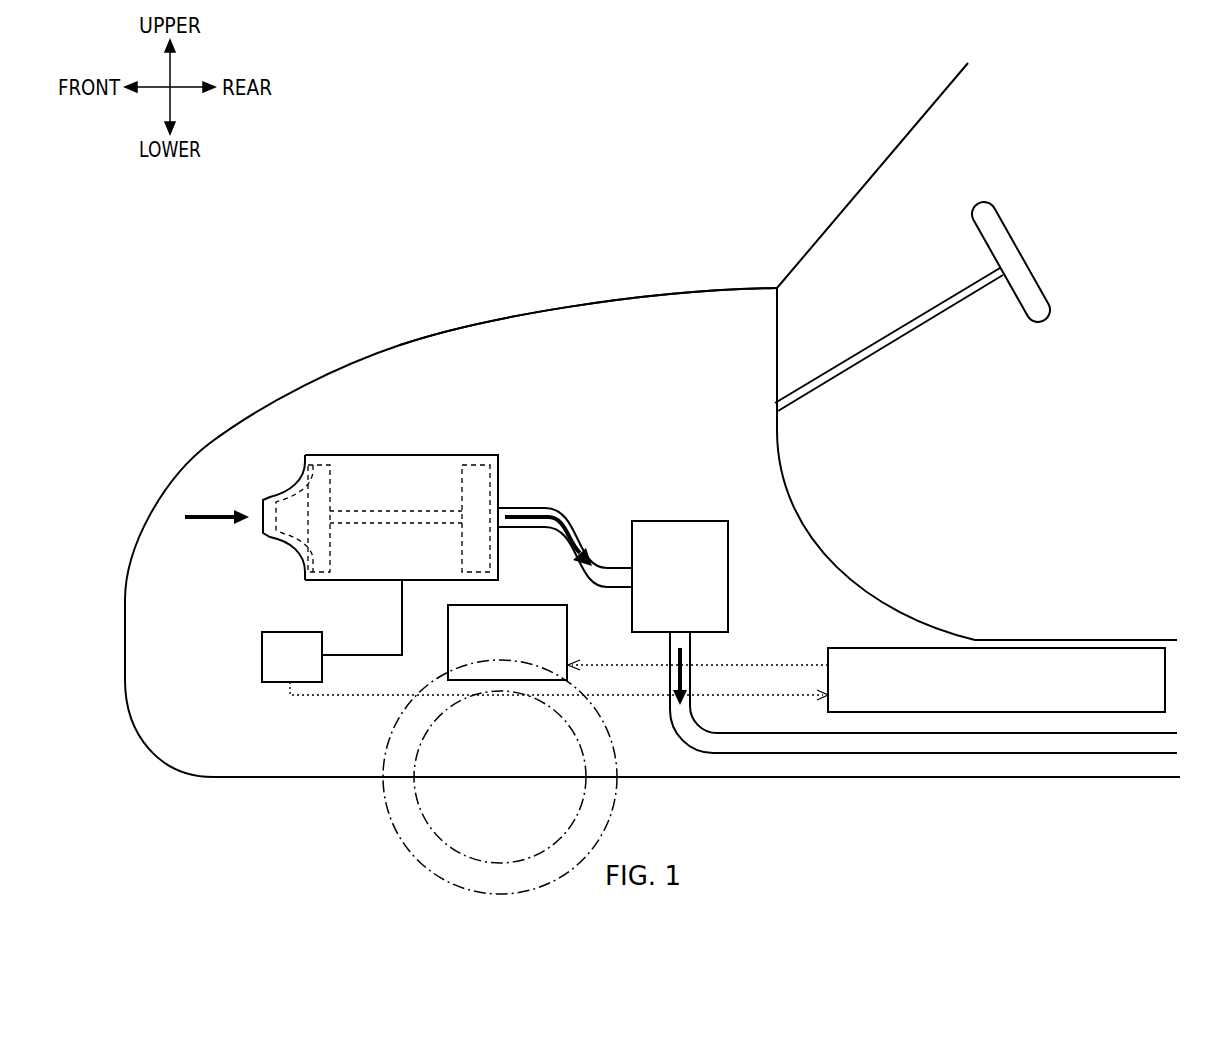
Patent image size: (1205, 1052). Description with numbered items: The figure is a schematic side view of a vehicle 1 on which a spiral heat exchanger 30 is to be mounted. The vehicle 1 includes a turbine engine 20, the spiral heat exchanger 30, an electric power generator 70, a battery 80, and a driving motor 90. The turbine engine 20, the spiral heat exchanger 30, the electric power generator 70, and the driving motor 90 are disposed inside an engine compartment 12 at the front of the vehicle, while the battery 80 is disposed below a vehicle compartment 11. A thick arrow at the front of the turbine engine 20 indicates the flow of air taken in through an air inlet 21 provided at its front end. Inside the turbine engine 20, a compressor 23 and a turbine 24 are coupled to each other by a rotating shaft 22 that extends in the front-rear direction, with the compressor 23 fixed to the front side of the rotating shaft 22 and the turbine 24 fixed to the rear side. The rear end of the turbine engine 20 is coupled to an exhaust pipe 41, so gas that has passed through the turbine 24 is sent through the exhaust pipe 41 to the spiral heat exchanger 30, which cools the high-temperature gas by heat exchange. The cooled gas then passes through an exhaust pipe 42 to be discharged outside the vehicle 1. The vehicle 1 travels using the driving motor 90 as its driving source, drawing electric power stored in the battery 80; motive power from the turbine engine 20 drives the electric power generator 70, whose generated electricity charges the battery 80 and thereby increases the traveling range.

The vehicle 1 is at (332, 126).
The vehicle compartment 11 is at (898, 193).
The engine compartment 12 is at (520, 345).
The turbine engine 20 is at (377, 455).
The air inlet 21 is at (258, 527).
The rotating shaft 22 is at (424, 511).
The compressor 23 is at (322, 457).
The turbine 24 is at (477, 462).
The spiral heat exchanger 30 is at (680, 521).
The exhaust pipe 41 is at (545, 508).
The exhaust pipe 42 is at (735, 733).
The electric power generator 70 is at (296, 632).
The battery 80 is at (850, 648).
The driving motor 90 is at (527, 605).